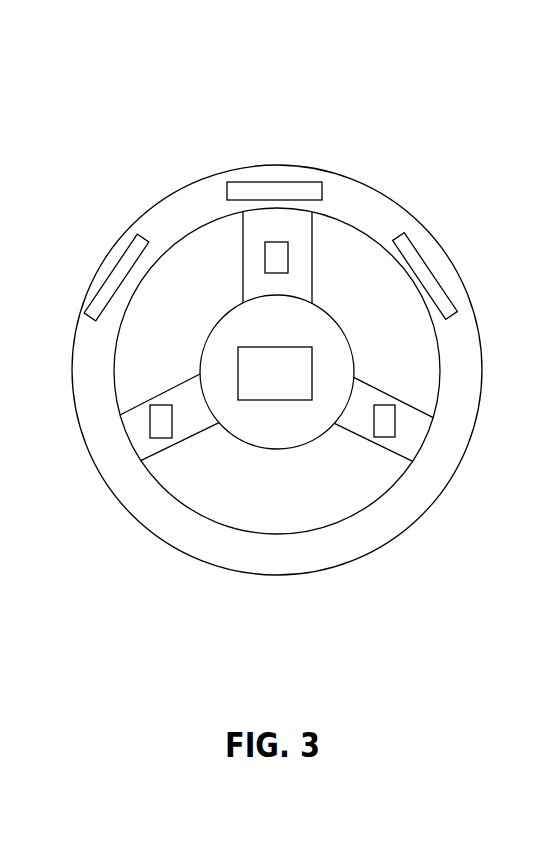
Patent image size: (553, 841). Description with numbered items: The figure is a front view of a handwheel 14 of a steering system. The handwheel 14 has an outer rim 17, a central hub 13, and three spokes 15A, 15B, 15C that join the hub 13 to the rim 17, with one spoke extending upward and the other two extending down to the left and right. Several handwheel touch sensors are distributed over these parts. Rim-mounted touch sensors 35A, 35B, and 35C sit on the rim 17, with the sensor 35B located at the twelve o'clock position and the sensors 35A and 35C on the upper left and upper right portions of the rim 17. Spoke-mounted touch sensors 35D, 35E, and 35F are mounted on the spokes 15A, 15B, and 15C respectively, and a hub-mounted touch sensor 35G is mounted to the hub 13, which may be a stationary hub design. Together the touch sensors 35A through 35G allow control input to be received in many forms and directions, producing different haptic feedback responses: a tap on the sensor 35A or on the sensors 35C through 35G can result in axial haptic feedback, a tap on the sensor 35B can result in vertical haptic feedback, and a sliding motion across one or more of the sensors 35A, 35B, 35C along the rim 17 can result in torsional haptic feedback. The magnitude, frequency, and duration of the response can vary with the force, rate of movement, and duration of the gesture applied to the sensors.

The handwheel 14 is at (313, 82).
The rim 17 is at (278, 576).
The hub 13 is at (321, 313).
The spoke 15A is at (205, 430).
The spoke 15B is at (312, 254).
The spoke 15C is at (348, 435).
The handwheel touch sensor 35A is at (113, 276).
The handwheel touch sensor 35B is at (277, 188).
The handwheel touch sensor 35C is at (427, 268).
The handwheel touch sensor 35D is at (158, 404).
The handwheel touch sensor 35E is at (265, 257).
The handwheel touch sensor 35F is at (385, 404).
The handwheel touch sensor 35G is at (277, 400).